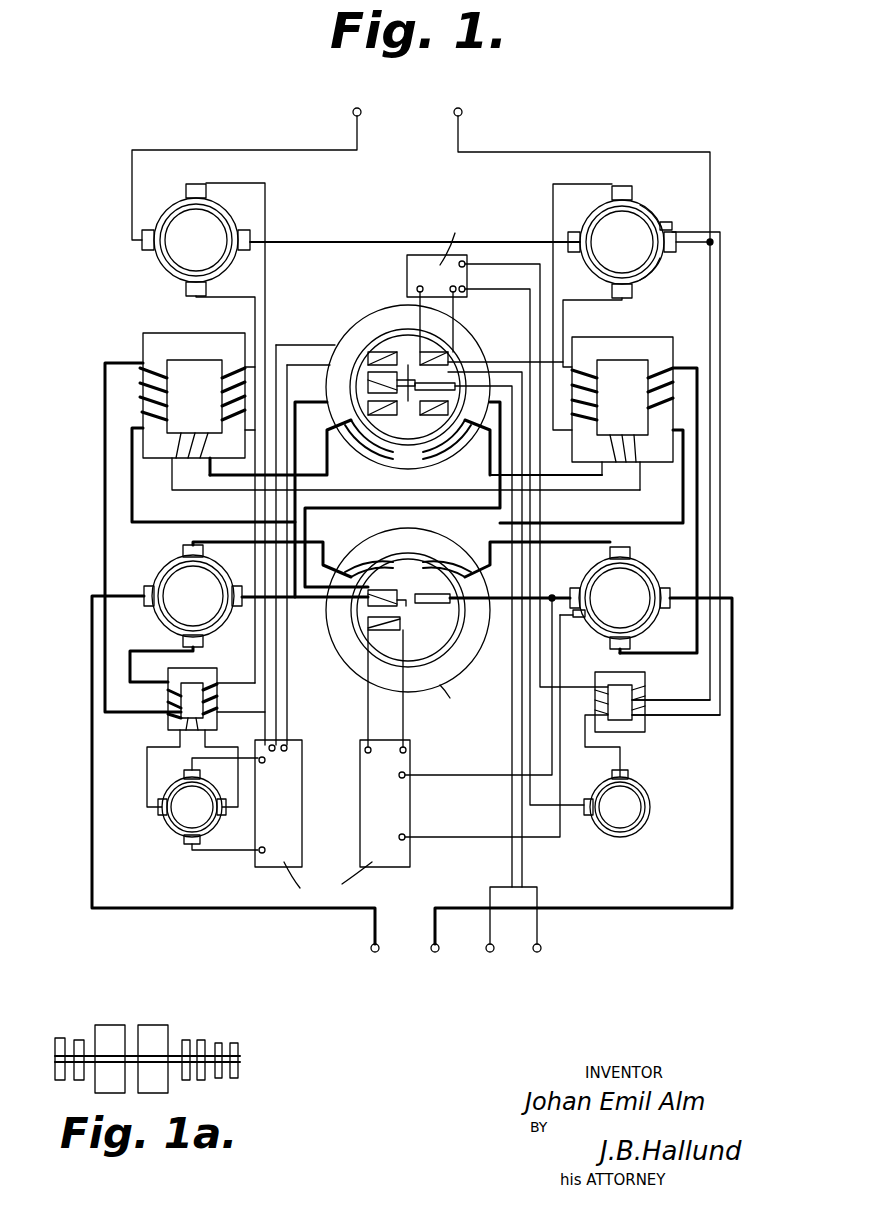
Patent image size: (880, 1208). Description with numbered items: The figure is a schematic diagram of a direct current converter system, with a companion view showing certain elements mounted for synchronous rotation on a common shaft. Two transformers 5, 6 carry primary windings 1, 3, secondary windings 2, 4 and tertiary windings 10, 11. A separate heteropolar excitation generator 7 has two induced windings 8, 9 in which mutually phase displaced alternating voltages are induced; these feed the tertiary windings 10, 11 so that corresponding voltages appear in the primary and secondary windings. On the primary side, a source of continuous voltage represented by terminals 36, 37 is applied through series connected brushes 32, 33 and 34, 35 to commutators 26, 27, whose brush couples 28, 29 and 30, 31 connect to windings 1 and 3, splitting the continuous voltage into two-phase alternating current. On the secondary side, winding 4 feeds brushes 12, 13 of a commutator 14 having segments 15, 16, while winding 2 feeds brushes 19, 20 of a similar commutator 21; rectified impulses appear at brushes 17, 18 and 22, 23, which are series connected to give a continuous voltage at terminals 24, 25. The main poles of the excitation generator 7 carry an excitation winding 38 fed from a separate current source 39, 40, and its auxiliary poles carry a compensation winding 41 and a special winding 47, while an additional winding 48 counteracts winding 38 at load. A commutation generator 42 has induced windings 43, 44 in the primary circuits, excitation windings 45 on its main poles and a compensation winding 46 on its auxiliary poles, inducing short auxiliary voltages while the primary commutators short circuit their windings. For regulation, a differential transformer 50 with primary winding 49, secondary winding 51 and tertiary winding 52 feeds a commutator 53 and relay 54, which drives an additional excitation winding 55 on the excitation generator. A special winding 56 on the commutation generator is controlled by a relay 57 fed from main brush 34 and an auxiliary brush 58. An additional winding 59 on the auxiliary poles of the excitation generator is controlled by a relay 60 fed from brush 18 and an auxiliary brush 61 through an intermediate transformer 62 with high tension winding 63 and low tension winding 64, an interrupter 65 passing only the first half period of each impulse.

In FIG. 1, the primary winding 1 is at (143, 396).
In FIG. 1, the secondary winding 2 is at (222, 394).
In FIG. 1, the primary winding 3 is at (650, 384).
In FIG. 1, the secondary winding 4 is at (592, 388).
In FIG. 1, the transformer 5 is at (200, 337).
In FIG. 1, the transformer 6 is at (600, 330).
In FIG. 1, the excitation generator 7 is at (385, 312).
In FIG. 1A, the excitation generator 7 is at (108, 1035).
In FIG. 1, the induced winding 8 is at (365, 455).
In FIG. 1, the induced winding 9 is at (452, 445).
In FIG. 1, the tertiary winding 10 is at (186, 460).
In FIG. 1, the tertiary winding 11 is at (628, 466).
In FIG. 1, the brush 12 is at (636, 296).
In FIG. 1, the brush 13 is at (610, 192).
In FIG. 1, the commutator 14 is at (622, 242).
In FIG. 1A, the commutator 14 is at (79, 1040).
In FIG. 1, the segment 15 is at (655, 212).
In FIG. 1, the segment 16 is at (655, 272).
In FIG. 1, the brush 17 is at (576, 252).
In FIG. 1, the brush 18 is at (676, 252).
In FIG. 1, the brush 19 is at (188, 190).
In FIG. 1, the brush 20 is at (188, 292).
In FIG. 1, the commutator 21 is at (196, 240).
In FIG. 1A, the commutator 21 is at (60, 1038).
In FIG. 1, the brush 22 is at (150, 232).
In FIG. 1, the brush 23 is at (248, 232).
In FIG. 1, the terminal 24 is at (249, 164).
In FIG. 1, the terminal 25 is at (580, 394).
In FIG. 1, the commutator 26 is at (193, 596).
In FIG. 1A, the commutator 26 is at (187, 1040).
In FIG. 1, the commutator 27 is at (620, 598).
In FIG. 1A, the commutator 27 is at (202, 1040).
In FIG. 1, the brush 28 is at (185, 550).
In FIG. 1, the brush 29 is at (205, 645).
In FIG. 1, the brush 30 is at (632, 552).
In FIG. 1, the brush 31 is at (610, 648).
In FIG. 1, the brush 32 is at (146, 592).
In FIG. 1, the brush 33 is at (238, 588).
In FIG. 1, the brush 34 is at (576, 590).
In FIG. 1, the brush 35 is at (668, 590).
In FIG. 1, the terminal 36 is at (373, 960).
In FIG. 1, the terminal 37 is at (434, 960).
In FIG. 1, the excitation winding 38 is at (368, 385).
In FIG. 1, the current source terminal 39 is at (508, 931).
In FIG. 1, the current source terminal 40 is at (535, 960).
In FIG. 1, the compensation winding 41 is at (450, 380).
In FIG. 1, the commutation generator 42 is at (452, 648).
In FIG. 1A, the commutation generator 42 is at (153, 1028).
In FIG. 1, the induced winding 43 is at (360, 556).
In FIG. 1, the induced winding 44 is at (470, 548).
In FIG. 1, the excitation winding 45 is at (380, 590).
In FIG. 1, the compensation winding 46 is at (428, 594).
In FIG. 1, the special winding 47 is at (455, 392).
In FIG. 1, the additional excitation winding 48 is at (385, 420).
In FIG. 1, the primary winding 49 is at (170, 702).
In FIG. 1, the differential transformer 50 is at (212, 674).
In FIG. 1, the secondary winding 51 is at (215, 700).
In FIG. 1, the tertiary winding 52 is at (186, 728).
In FIG. 1, the commutator 53 is at (208, 804).
In FIG. 1A, the commutator 53 is at (220, 1043).
In FIG. 1, the relay 54 is at (298, 624).
In FIG. 1, the additional excitation winding 55 is at (372, 352).
In FIG. 1, the special excitation winding 56 is at (400, 624).
In FIG. 1, the relay 57 is at (451, 741).
In FIG. 1, the auxiliary brush 58 is at (576, 617).
In FIG. 1, the additional excitation winding 59 is at (445, 358).
In FIG. 1, the relay 60 is at (507, 511).
In FIG. 1, the auxiliary brush 61 is at (672, 224).
In FIG. 1, the intermediate transformer 62 is at (640, 730).
In FIG. 1, the high tension winding 63 is at (646, 702).
In FIG. 1, the low tension winding 64 is at (600, 702).
In FIG. 1, the interrupter 65 is at (617, 803).
In FIG. 1A, the interrupter 65 is at (238, 1045).